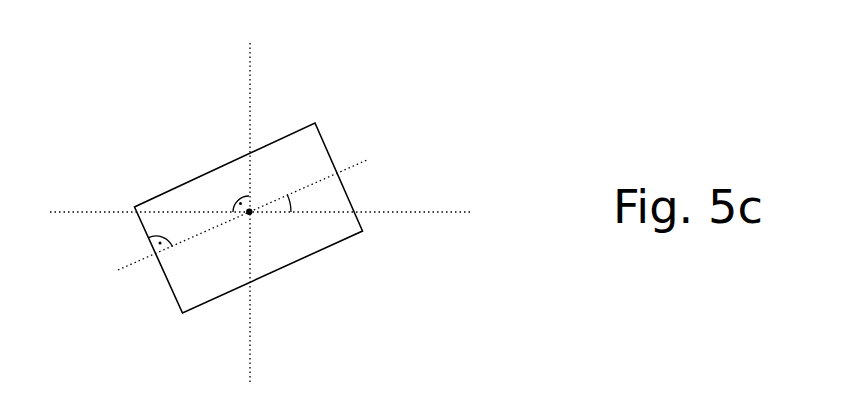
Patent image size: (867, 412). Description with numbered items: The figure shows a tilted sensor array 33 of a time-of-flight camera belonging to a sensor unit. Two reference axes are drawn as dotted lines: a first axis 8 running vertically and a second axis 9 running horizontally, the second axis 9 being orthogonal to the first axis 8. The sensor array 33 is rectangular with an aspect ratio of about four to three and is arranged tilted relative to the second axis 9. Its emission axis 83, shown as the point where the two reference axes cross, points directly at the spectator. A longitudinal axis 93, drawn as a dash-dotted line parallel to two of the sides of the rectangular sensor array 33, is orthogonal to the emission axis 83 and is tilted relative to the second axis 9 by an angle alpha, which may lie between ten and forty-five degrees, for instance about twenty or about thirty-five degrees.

The first axis 8 is at (190, 195).
The second axis 9 is at (289, 186).
The sensor array 33 is at (230, 217).
The emission axis 83 is at (354, 280).
The longitudinal axis 93 is at (208, 256).